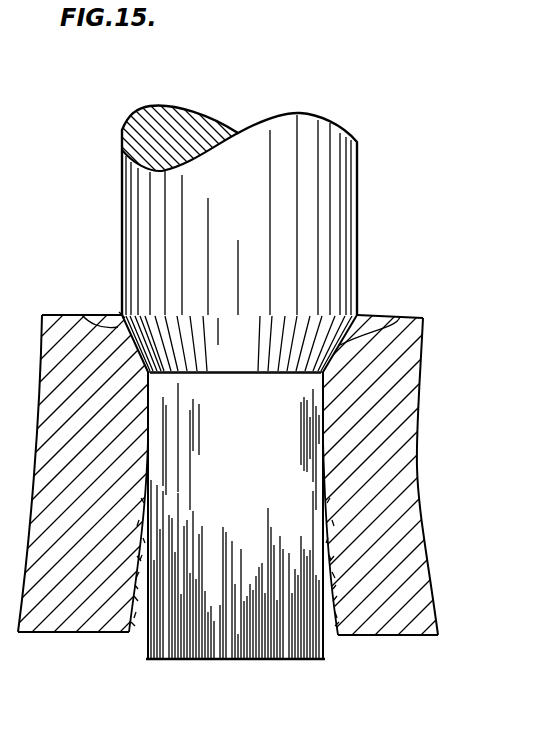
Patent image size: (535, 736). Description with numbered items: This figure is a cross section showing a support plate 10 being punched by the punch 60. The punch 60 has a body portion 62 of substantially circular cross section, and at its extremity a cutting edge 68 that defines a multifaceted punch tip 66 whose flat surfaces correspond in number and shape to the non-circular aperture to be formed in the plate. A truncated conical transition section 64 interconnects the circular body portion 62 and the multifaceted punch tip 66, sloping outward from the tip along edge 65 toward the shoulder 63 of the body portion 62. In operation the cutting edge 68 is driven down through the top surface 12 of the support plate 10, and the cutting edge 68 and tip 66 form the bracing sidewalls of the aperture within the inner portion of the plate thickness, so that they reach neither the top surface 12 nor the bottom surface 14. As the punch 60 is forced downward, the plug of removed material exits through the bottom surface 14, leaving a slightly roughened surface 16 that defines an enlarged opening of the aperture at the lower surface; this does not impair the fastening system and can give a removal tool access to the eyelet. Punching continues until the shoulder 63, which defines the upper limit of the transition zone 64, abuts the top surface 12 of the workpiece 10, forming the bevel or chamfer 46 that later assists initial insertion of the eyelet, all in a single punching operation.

The support plate 10 is at (425, 358).
The top surface 12 is at (370, 315).
The bottom surface 14 is at (395, 636).
The roughened surface 16 is at (140, 635).
The chamfer edge 46 is at (82, 315).
The punch 60 is at (122, 143).
The body portion 62 is at (121, 173).
The shoulder 63 is at (122, 315).
The truncated conical transition section 64 is at (242, 345).
The edge 65 is at (232, 372).
The multifaceted punch tip 66 is at (279, 502).
The cutting edge 68 is at (147, 658).